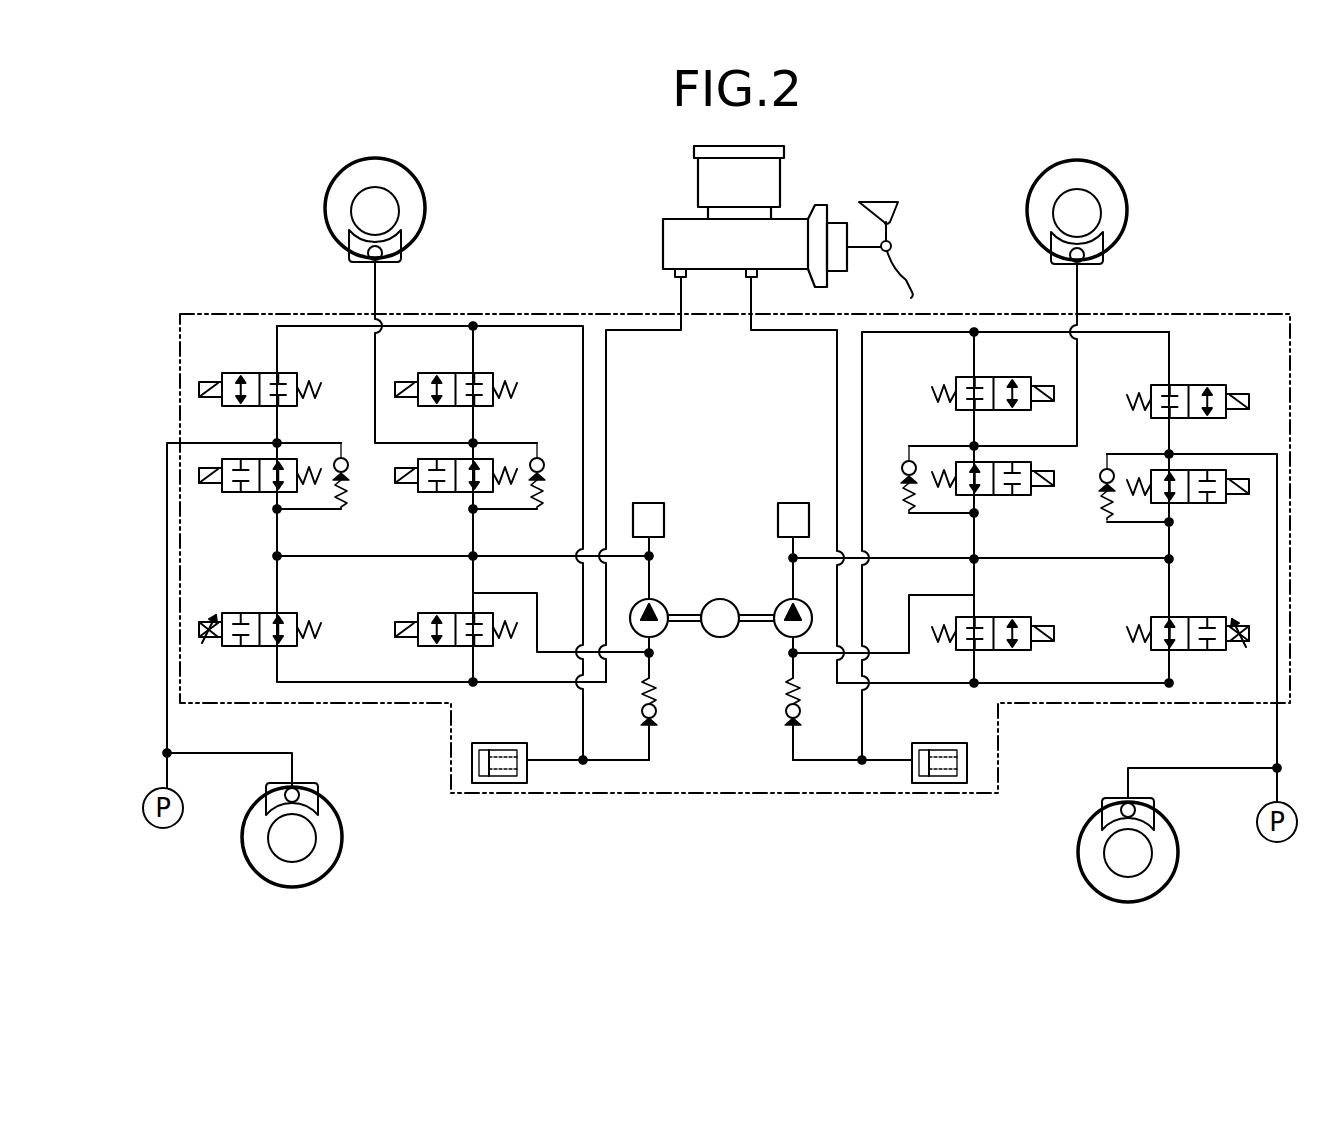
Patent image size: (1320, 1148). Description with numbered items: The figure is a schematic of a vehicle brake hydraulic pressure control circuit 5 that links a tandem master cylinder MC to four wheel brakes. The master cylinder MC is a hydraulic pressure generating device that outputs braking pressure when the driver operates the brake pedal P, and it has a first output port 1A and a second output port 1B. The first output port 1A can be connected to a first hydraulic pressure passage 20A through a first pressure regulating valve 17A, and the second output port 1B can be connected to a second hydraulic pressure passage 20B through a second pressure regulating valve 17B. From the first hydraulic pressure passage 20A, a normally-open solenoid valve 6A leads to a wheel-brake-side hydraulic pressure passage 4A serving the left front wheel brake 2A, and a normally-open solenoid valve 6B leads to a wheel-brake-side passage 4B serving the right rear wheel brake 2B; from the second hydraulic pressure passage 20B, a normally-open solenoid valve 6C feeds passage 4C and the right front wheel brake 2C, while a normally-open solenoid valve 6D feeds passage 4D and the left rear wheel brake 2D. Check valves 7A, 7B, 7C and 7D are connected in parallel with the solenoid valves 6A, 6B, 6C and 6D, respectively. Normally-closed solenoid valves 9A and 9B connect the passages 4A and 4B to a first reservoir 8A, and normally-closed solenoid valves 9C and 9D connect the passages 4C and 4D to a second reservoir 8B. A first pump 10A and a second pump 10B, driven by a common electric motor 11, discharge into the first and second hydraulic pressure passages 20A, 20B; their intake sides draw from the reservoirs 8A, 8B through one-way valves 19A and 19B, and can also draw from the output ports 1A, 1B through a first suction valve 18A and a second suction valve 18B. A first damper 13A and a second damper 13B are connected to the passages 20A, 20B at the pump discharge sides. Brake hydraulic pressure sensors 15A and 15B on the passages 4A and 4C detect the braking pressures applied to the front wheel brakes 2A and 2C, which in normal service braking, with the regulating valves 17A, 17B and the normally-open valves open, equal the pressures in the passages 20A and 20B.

The master cylinder MC is at (672, 244).
The brake pedal P is at (905, 282).
The first output port 1A is at (676, 277).
The second output port 1B is at (752, 277).
The left front wheel brake 2A is at (350, 843).
The right rear wheel brake 2B is at (322, 203).
The right front wheel brake 2C is at (1070, 858).
The left rear wheel brake 2D is at (1134, 207).
The wheel-brake-side hydraulic pressure passage 4A is at (168, 746).
The wheel-brake-side hydraulic pressure passage 4B is at (378, 290).
The wheel-brake-side hydraulic pressure passage 4C is at (1217, 768).
The wheel brake-side hydraulic pressure passage 4D is at (1082, 290).
The hydraulic pressure control circuit 5 is at (1208, 313).
The normally-open solenoid valve 6A is at (264, 493).
The normally-open solenoid valve 6B is at (461, 493).
The normally-open solenoid valve 6C is at (1200, 503).
The normally-open solenoid valve 6D is at (987, 495).
The check valve 7A is at (348, 458).
The check valve 7B is at (545, 458).
The check valve 7C is at (1100, 472).
The check valve 7D is at (903, 465).
The first reservoir 8A is at (505, 736).
The second reservoir 8B is at (932, 736).
The normally-closed solenoid valve 9A is at (241, 373).
The normally-closed solenoid valve 9B is at (482, 373).
The normally-closed solenoid valve 9C is at (1181, 385).
The normally-closed solenoid valve 9D is at (986, 377).
The first pump 10A is at (658, 634).
The second pump 10B is at (782, 632).
The electric motor 11 is at (718, 637).
The first damper 13A is at (648, 503).
The second damper 13B is at (778, 514).
The brake hydraulic pressure sensor 15A is at (160, 829).
The brake hydraulic pressure sensor 15B is at (1277, 843).
The first pressure regulating valve 17A is at (248, 647).
The second pressure regulating valve 17B is at (1187, 650).
The first suction valve 18A is at (440, 613).
The second suction valve 18B is at (997, 617).
The one-way valve 19A is at (653, 730).
The one-way valve 19B is at (788, 724).
The first hydraulic pressure passage 20A is at (481, 560).
The second hydraulic pressure passage 20B is at (1080, 560).